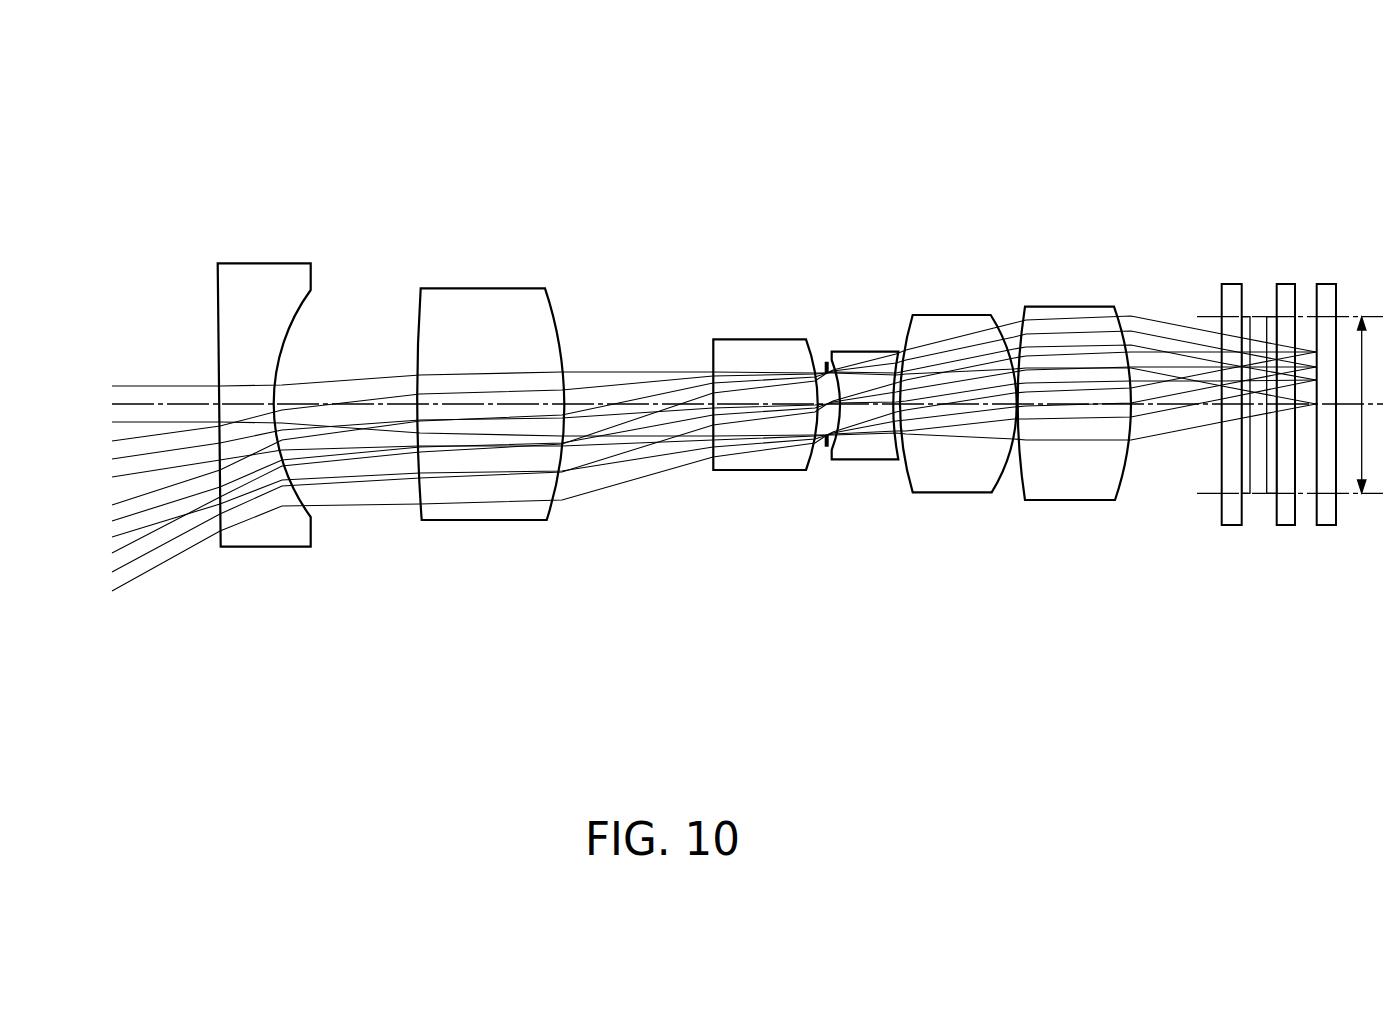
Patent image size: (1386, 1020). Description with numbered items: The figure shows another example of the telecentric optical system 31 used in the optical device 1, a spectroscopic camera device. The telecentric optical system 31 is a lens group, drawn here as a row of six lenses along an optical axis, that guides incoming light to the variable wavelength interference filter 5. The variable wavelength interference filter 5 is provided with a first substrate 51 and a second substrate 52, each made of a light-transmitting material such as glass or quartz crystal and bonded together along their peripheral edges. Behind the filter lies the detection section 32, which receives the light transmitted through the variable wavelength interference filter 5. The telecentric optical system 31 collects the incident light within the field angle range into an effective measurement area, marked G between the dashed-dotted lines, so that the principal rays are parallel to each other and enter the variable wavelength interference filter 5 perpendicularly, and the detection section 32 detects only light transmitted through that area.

The optical device 1 is at (1110, 116).
The telecentric optical system 31 is at (1127, 575).
The variable wavelength interference filter 5 is at (1251, 422).
The first substrate 51 is at (1282, 284).
The second substrate 52 is at (1226, 284).
The detection section 32 is at (1323, 527).